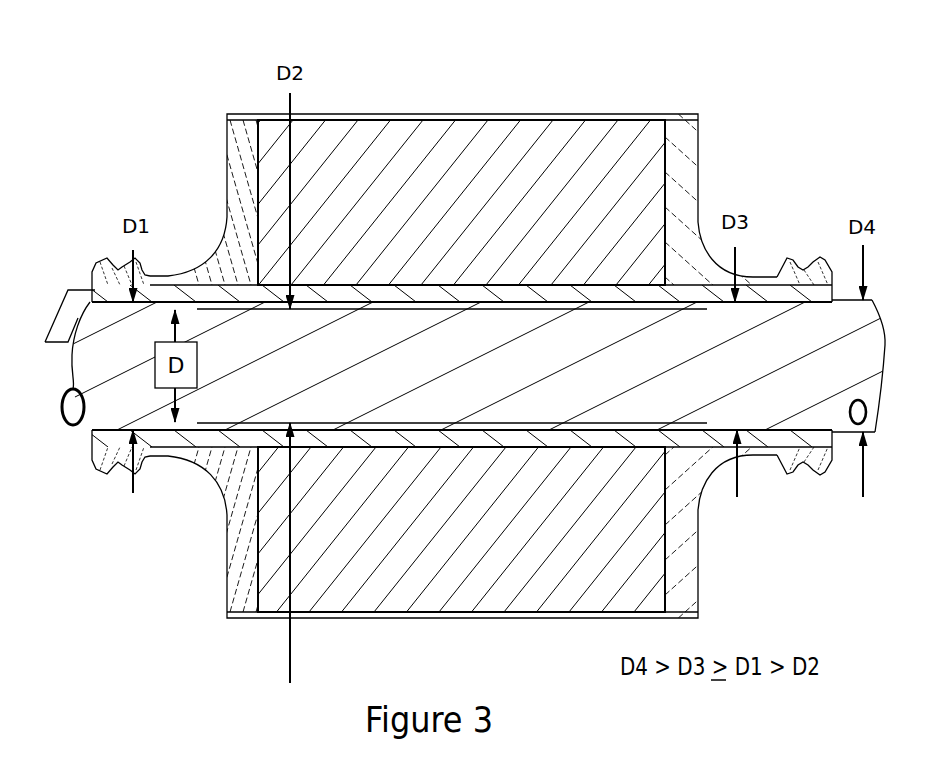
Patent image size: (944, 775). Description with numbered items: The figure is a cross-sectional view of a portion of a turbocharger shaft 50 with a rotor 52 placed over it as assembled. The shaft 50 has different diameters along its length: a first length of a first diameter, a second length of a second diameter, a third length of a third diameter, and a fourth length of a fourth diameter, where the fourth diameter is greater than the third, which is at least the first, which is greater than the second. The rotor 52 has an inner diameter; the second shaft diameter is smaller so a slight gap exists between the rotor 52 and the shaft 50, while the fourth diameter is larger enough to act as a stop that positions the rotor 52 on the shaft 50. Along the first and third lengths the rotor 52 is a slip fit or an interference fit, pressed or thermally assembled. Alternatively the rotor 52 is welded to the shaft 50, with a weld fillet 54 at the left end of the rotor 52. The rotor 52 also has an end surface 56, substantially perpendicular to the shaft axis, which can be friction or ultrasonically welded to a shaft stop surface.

The turbocharger shaft 50 is at (424, 366).
The rotor 52 is at (703, 183).
The weld fillet 54 is at (90, 302).
The end surface 56 is at (833, 296).